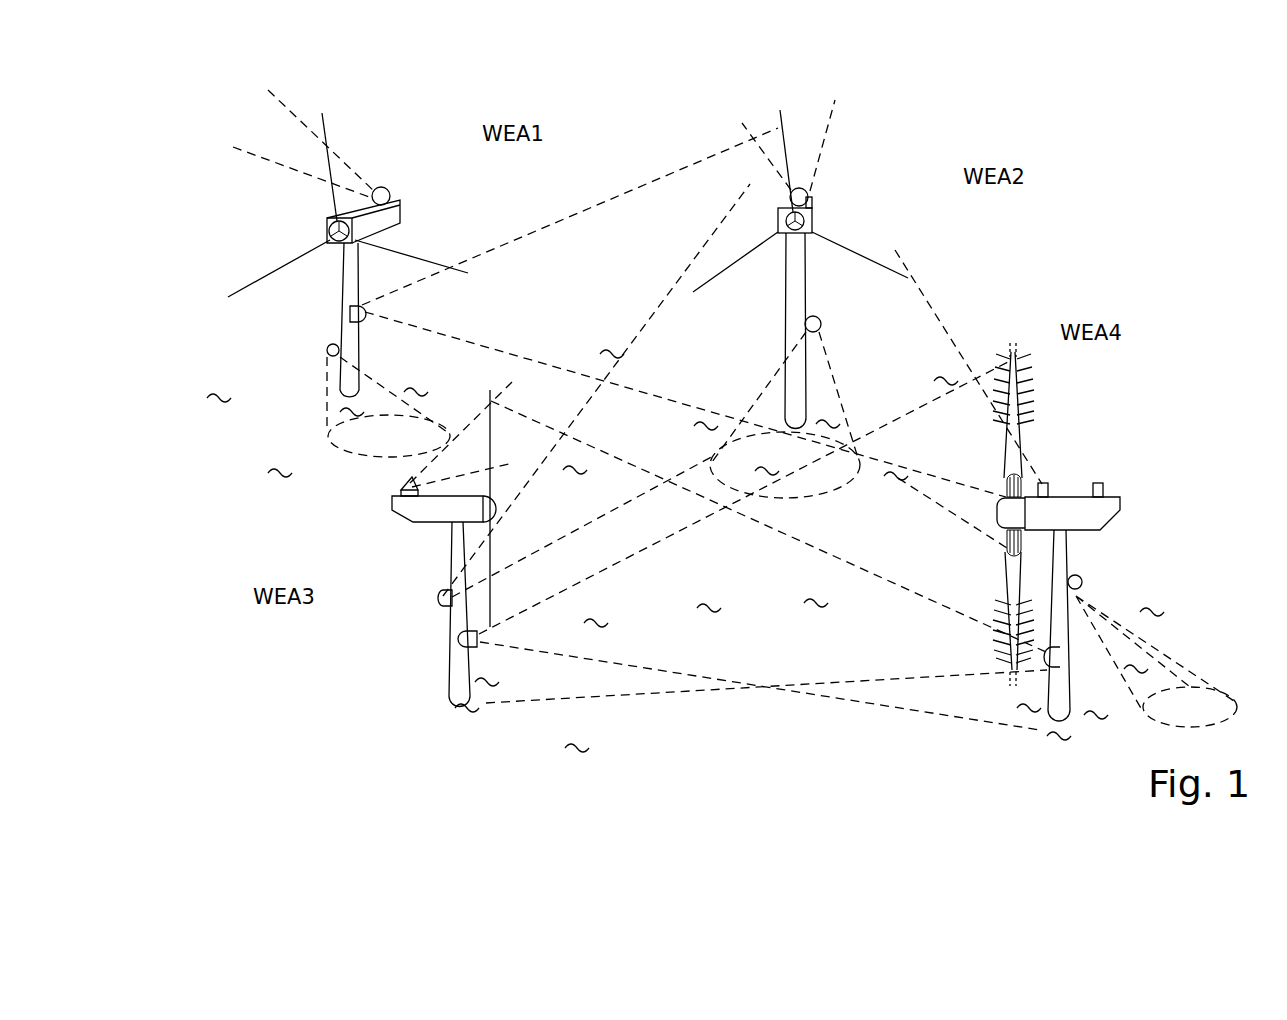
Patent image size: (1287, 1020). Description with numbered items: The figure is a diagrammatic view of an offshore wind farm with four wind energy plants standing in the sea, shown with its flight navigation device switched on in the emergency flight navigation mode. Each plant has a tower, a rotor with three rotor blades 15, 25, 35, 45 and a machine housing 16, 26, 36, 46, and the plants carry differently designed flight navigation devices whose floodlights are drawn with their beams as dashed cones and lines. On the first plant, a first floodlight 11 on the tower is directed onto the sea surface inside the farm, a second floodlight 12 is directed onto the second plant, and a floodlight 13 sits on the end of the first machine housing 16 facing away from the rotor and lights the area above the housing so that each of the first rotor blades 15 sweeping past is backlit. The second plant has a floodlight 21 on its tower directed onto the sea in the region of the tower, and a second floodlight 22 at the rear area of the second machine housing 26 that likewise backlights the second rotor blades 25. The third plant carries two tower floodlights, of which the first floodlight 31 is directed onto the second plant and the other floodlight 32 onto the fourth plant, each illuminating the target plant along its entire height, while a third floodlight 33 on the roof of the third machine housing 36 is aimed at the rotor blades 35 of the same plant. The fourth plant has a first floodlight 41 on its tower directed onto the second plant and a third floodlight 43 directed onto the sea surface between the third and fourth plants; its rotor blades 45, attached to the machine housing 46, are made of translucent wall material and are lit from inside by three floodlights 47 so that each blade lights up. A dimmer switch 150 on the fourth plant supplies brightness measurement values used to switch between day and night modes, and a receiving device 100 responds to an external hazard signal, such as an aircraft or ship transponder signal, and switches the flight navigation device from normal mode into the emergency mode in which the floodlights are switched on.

The first floodlight 11 is at (327, 352).
The second floodlight 12 is at (352, 312).
The floodlight 13 is at (387, 190).
The rotor blades 15 is at (320, 190).
The first machine housing 16 is at (402, 212).
The floodlight 21 is at (822, 327).
The second floodlight 22 is at (796, 189).
The rotor blades 25 is at (781, 124).
The second machine housing 26 is at (812, 225).
The first floodlight 31 is at (440, 600).
The floodlight 32 is at (462, 640).
The third floodlight 33 is at (402, 490).
The rotor blades 35 is at (492, 552).
The third machine housing 36 is at (413, 508).
The first floodlight 41 is at (1062, 660).
The third floodlight 43 is at (1083, 581).
The rotor blades 45 is at (1022, 433).
The machine housing 46 is at (1118, 513).
The floodlights 47 is at (1007, 493).
The receiving device 100 is at (812, 203).
The dimmer switch 150 is at (1043, 483).